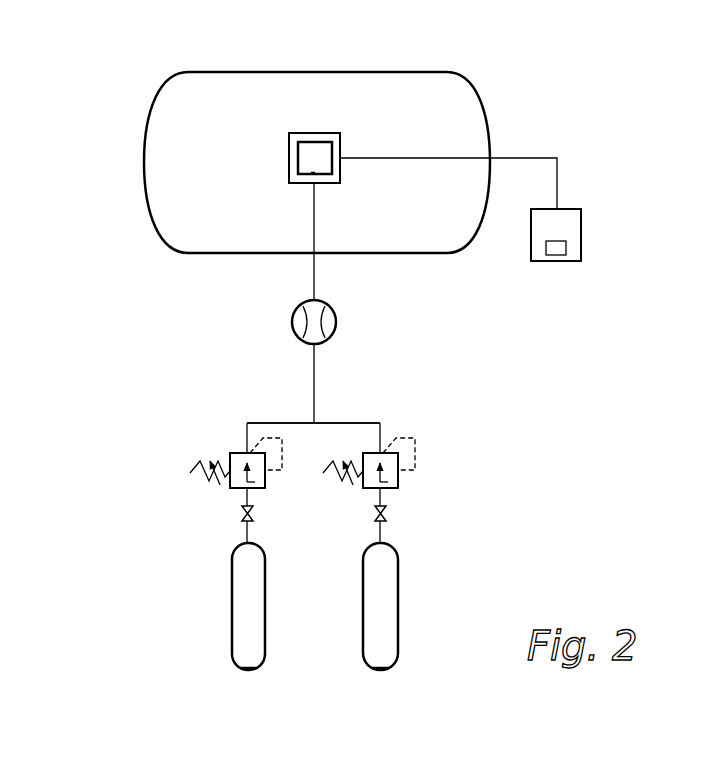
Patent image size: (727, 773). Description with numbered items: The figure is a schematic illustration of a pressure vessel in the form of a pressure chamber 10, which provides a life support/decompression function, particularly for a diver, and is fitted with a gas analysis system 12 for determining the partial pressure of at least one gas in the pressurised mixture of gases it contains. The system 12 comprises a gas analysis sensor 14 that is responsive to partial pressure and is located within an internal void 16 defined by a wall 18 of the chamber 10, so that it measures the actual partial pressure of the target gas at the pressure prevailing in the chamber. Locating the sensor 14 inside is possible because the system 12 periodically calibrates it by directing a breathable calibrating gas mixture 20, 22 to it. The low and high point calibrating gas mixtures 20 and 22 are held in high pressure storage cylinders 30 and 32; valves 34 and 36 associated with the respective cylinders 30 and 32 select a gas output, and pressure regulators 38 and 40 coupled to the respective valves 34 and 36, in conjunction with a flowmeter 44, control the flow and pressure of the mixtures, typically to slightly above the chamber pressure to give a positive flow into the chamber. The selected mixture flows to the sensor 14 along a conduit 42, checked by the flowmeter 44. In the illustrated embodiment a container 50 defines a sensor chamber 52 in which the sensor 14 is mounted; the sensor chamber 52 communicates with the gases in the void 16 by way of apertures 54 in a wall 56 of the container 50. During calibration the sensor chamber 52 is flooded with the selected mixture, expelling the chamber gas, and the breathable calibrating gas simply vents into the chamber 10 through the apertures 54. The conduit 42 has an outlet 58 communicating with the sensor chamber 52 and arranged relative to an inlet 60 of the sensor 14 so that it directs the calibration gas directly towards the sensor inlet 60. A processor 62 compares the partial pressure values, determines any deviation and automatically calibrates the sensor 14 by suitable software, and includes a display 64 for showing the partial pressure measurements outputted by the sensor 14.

The pressure chamber 10 is at (122, 76).
The gas analysis system 12 is at (470, 454).
The gas analysis sensor 14 is at (290, 188).
The internal void 16 is at (402, 87).
The wall 18 is at (475, 92).
The low point calibrating gas mixture 20 is at (247, 593).
The high point calibrating gas mixture 22 is at (382, 610).
The high pressure storage cylinder 30 is at (247, 672).
The high pressure storage cylinder 32 is at (380, 672).
The valve 34 is at (242, 512).
The valve 36 is at (385, 520).
The pressure regulator 38 is at (257, 490).
The pressure regulator 40 is at (398, 487).
The conduit 42 is at (314, 386).
The flowmeter 44 is at (336, 327).
The container 50 is at (278, 173).
The sensor chamber 52 is at (334, 182).
The apertures 54 is at (333, 122).
The wall 56 is at (342, 135).
The outlet 58 is at (306, 194).
The sensor inlet 60 is at (302, 166).
The processor 62 is at (581, 237).
The display 64 is at (557, 256).